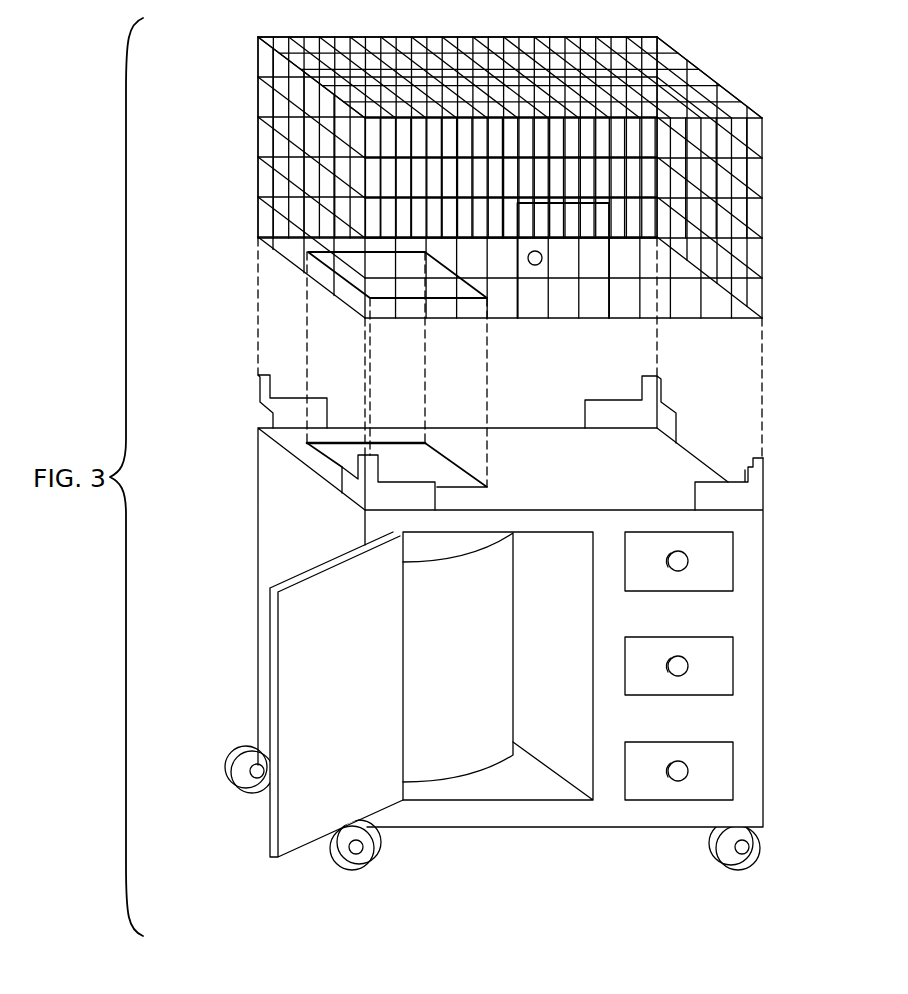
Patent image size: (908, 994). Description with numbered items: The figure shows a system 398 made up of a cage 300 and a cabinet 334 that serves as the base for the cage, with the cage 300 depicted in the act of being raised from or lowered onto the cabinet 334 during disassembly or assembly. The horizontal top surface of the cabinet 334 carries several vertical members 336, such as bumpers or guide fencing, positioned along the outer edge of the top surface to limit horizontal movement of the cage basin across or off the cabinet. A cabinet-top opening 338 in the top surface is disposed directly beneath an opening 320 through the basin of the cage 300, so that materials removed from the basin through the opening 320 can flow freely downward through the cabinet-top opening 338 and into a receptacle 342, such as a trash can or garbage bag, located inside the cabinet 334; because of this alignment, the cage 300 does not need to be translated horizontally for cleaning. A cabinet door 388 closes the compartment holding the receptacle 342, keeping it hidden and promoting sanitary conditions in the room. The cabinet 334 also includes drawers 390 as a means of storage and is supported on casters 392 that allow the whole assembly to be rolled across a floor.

The system 398 is at (812, 128).
The cage 300 is at (742, 214).
The opening through the basin 320 is at (355, 278).
The cabinet 334 is at (262, 480).
The vertical members 336 is at (262, 414).
The cabinet-top opening 338 is at (437, 462).
The cabinet door 388 is at (293, 666).
The receptacle 342 is at (462, 757).
The drawers 390 is at (718, 665).
The casters 392 is at (250, 766).